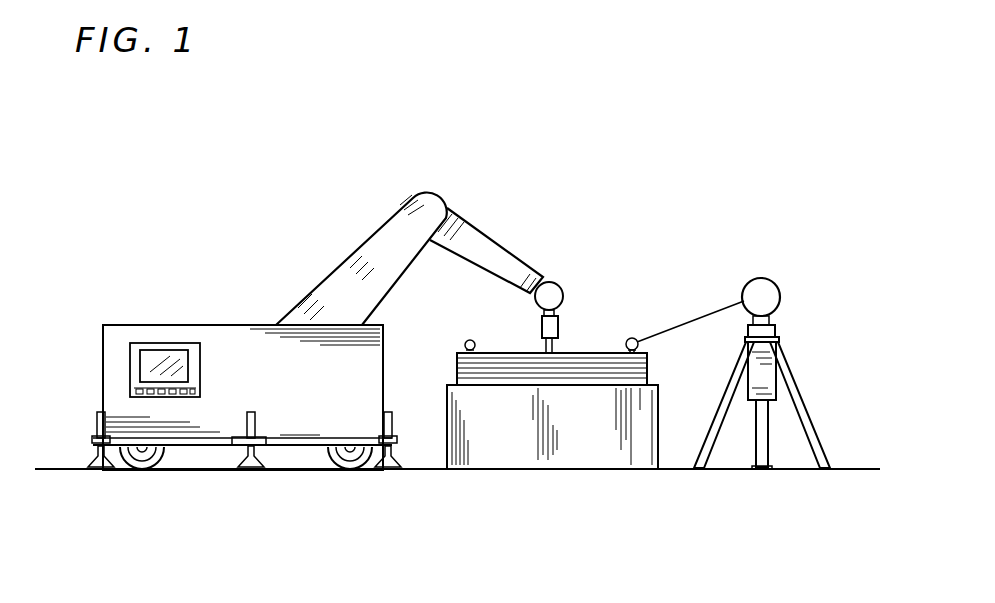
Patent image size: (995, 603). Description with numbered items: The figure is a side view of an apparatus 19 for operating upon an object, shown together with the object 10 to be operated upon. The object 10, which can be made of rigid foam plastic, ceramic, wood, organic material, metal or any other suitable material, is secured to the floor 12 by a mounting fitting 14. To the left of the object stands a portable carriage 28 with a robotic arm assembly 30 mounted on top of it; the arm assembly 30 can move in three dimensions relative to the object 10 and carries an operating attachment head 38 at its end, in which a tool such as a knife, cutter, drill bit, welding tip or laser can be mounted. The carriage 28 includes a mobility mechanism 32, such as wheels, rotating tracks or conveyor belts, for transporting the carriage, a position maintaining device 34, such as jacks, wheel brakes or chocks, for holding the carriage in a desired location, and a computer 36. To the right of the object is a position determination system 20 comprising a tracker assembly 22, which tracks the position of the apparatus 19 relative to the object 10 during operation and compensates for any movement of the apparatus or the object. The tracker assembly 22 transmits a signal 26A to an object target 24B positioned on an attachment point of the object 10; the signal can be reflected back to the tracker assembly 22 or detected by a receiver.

The object 10 is at (590, 353).
The floor 12 is at (855, 468).
The mounting fitting 14 is at (583, 457).
The apparatus 19 is at (617, 173).
The position determination system 20 is at (812, 388).
The tracker assembly 22 is at (780, 290).
The object target 24B is at (636, 338).
The signal 26A is at (700, 312).
The portable carriage 28 is at (172, 325).
The robotic arm assembly 30 is at (480, 216).
The mobility mechanism 32 is at (162, 457).
The position maintaining device 34 is at (90, 465).
The computer 36 is at (142, 367).
The operating attachment head 38 is at (540, 328).